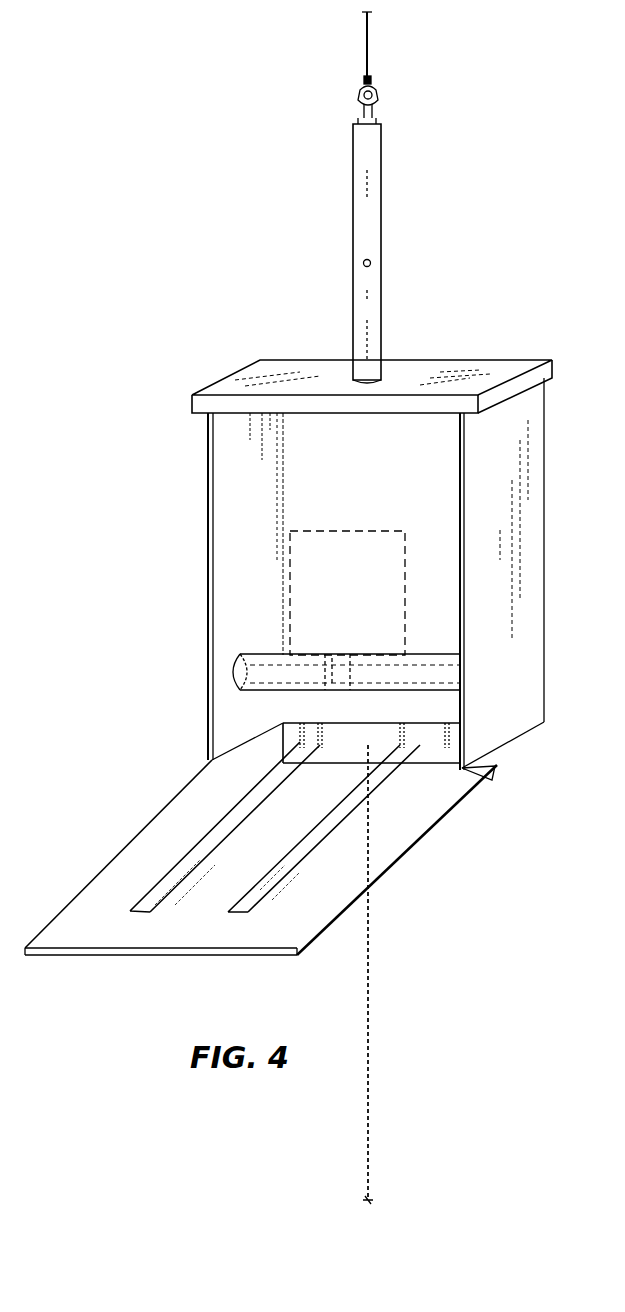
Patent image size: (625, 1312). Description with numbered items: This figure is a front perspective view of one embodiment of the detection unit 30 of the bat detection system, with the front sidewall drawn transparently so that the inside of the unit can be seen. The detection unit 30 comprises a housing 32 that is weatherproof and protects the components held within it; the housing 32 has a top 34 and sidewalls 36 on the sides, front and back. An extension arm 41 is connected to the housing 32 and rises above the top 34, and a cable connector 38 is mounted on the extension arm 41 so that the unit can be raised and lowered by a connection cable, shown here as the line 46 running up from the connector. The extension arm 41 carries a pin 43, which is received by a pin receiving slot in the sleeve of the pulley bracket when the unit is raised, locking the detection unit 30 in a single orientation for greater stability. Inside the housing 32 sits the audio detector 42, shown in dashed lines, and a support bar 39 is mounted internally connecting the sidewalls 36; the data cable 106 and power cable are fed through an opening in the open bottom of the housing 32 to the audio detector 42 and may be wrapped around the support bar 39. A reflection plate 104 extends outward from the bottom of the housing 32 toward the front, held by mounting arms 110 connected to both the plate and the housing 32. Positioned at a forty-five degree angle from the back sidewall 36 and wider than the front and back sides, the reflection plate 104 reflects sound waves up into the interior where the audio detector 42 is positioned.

The detection unit 30 is at (522, 312).
The housing 32 is at (538, 447).
The top 34 is at (422, 372).
The sidewalls 36 is at (503, 608).
The cable connector 38 is at (382, 98).
The support bar 39 is at (434, 677).
The extension arm 41 is at (362, 184).
The audio detector 42 is at (312, 524).
The pin 43 is at (362, 264).
The rod 46 is at (362, 42).
The reflection plate 104 is at (155, 865).
The data cable 106 is at (370, 960).
The mounting arms 110 is at (215, 832).